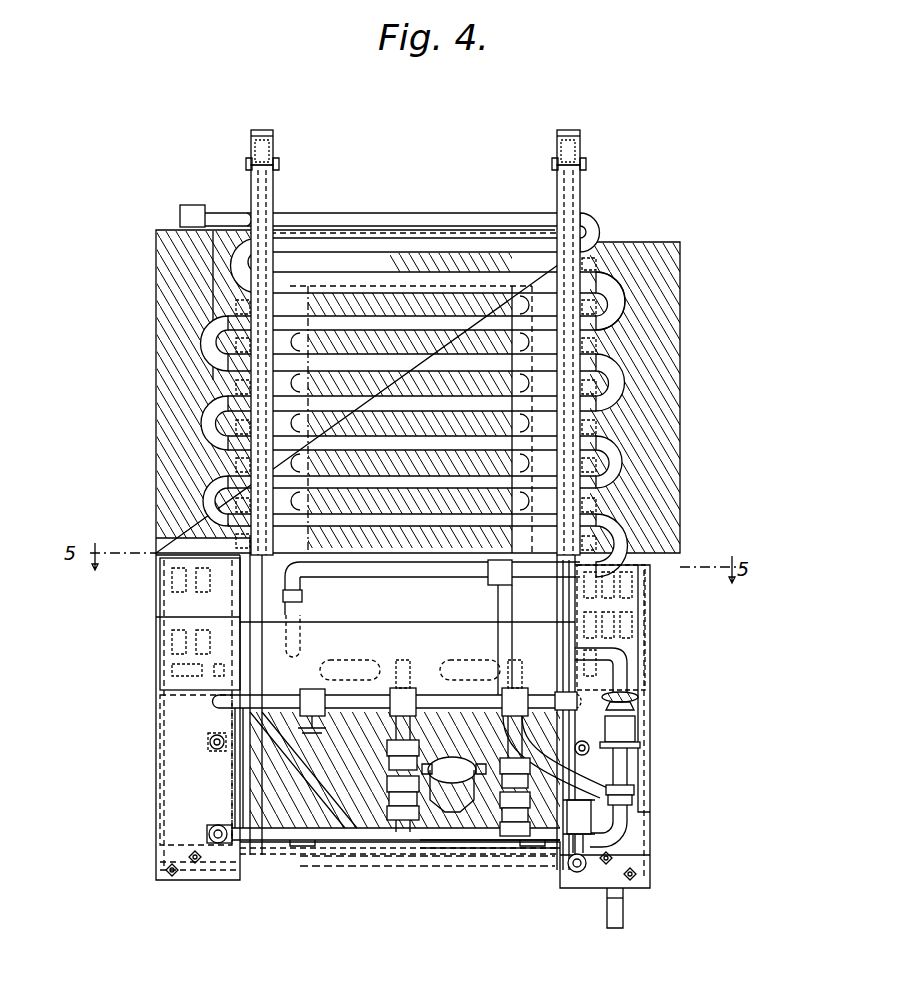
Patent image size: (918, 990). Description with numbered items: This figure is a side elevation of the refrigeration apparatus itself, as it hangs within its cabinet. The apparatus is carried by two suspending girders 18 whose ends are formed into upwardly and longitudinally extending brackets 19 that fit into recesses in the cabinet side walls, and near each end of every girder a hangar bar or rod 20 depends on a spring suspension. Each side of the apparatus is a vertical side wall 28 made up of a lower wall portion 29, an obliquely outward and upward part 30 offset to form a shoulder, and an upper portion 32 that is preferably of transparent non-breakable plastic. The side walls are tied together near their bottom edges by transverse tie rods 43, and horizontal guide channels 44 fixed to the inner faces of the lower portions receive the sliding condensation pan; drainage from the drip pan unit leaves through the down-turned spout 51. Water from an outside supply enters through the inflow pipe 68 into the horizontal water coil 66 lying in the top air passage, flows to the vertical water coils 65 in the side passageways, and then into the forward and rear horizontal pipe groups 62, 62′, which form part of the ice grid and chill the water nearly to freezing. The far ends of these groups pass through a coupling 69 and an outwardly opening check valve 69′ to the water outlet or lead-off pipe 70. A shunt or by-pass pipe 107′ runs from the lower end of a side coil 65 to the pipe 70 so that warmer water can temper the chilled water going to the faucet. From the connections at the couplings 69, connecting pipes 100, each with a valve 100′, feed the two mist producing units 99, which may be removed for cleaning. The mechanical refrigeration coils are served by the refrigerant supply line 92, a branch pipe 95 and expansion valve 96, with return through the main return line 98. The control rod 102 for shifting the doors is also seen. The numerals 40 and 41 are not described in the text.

The bracket 19 is at (258, 131).
The girder 18 is at (276, 165).
The hangar bar or rod 20 is at (276, 198).
The water inflow or supply pipe 68 is at (222, 214).
The horizontal water coil 66 is at (415, 214).
The vertical water coil 65 is at (626, 302).
The upper portion of side wall 32 is at (160, 386).
The obliquely directed portion of lower side wall 30 is at (176, 582).
The forward horizontal pipe group 62 is at (455, 662).
The rear horizontal pipe group 62′ is at (343, 660).
The connecting pipe 100 is at (580, 700).
The valve 100′ is at (311, 698).
The side wall 28 is at (185, 722).
The main return line 98 is at (210, 743).
The lower wall portion 29 is at (184, 775).
The expansion valve 96 is at (636, 729).
The control rod 102 is at (590, 748).
The frame upright 40 is at (652, 790).
The shunt or by-pass pipe 107′ is at (632, 765).
The refrigerant supply line 92 is at (212, 829).
The bracket 41 is at (655, 812).
The transverse tie rod 43 is at (178, 876).
The horizontal guide channel 44 is at (330, 866).
The mist producing unit 99 is at (470, 802).
The branch pipe 95 is at (490, 845).
The water outlet or lead-off pipe 70 is at (560, 862).
The down-turned spout 51 is at (626, 912).
The coupling 69 is at (503, 750).
The check valve 69′ is at (392, 765).